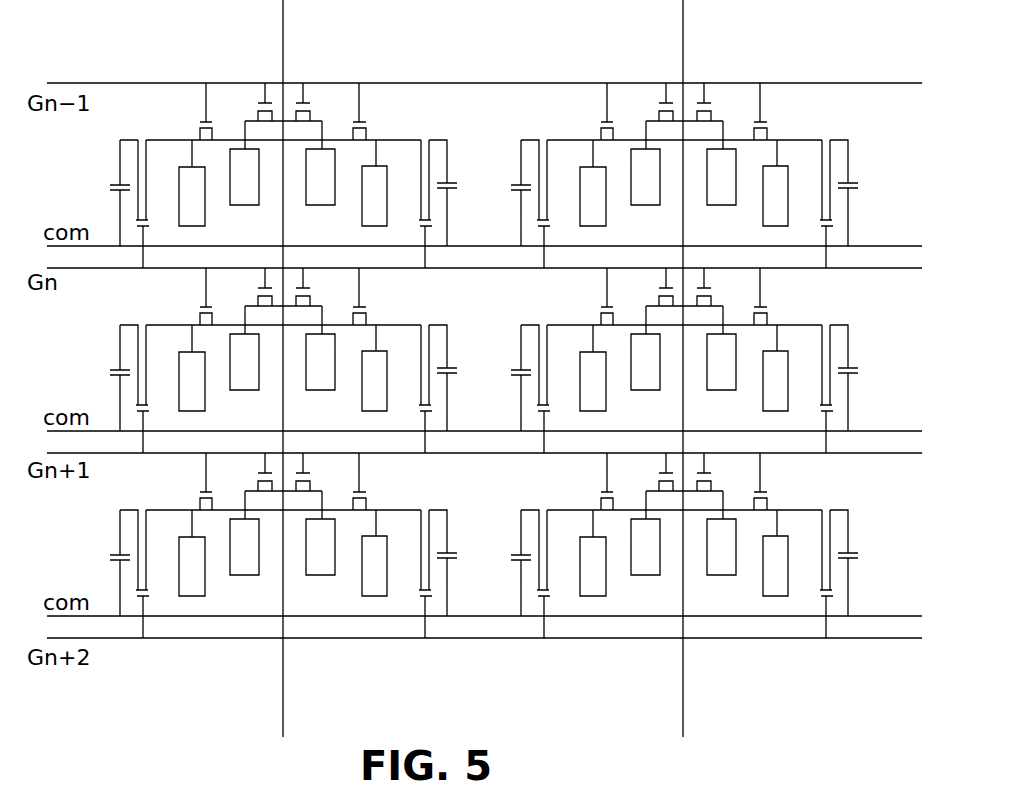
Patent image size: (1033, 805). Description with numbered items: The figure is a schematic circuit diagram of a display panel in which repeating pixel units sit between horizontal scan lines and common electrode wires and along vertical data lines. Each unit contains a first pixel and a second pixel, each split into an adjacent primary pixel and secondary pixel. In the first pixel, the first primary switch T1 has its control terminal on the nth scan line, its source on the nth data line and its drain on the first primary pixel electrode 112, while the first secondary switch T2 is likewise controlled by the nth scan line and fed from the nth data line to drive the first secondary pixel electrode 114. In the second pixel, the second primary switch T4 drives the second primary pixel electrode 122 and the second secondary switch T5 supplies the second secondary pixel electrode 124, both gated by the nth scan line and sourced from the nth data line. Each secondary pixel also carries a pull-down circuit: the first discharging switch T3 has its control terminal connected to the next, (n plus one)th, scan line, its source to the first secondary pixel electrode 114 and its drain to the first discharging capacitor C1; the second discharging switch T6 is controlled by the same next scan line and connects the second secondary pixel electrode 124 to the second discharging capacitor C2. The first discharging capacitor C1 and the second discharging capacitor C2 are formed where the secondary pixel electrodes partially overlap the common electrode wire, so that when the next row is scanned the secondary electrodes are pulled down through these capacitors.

The first primary switch T1 is at (257, 116).
The first secondary switch T2 is at (190, 111).
The first discharging switch T3 is at (156, 204).
The second primary switch T4 is at (309, 116).
The second secondary switch T5 is at (374, 111).
The second discharging switch T6 is at (412, 204).
The first discharging capacitor C1 is at (112, 193).
The second discharging capacitor C2 is at (455, 193).
The first primary pixel electrode 112 is at (251, 565).
The first secondary pixel electrode 114 is at (205, 596).
The second primary pixel electrode 122 is at (327, 565).
The second secondary pixel electrode 124 is at (382, 583).